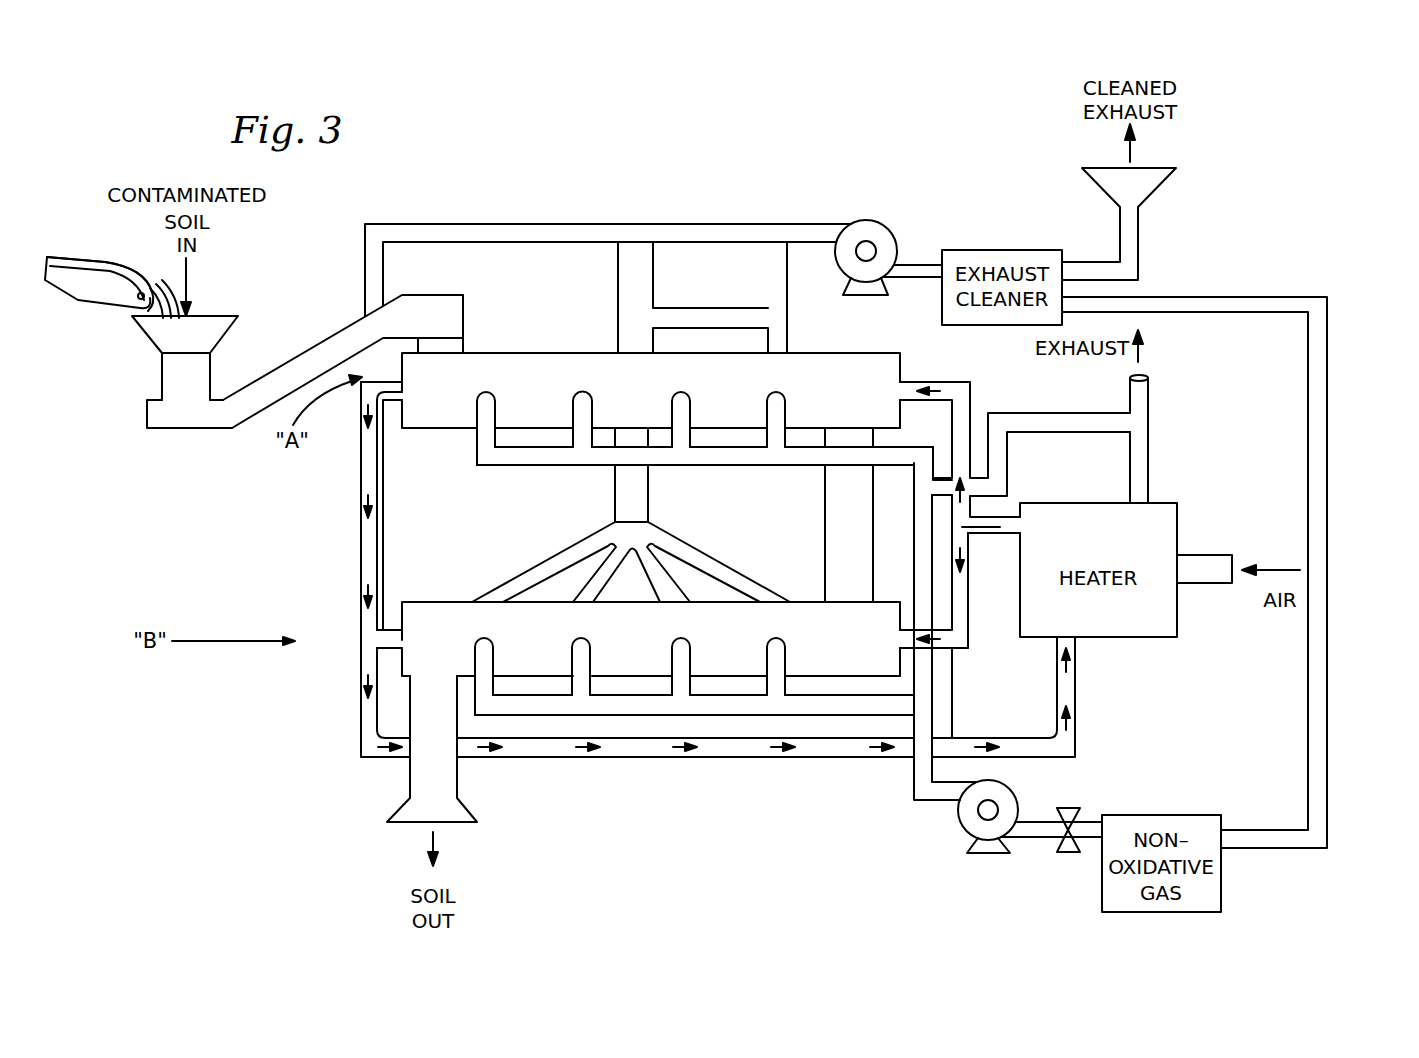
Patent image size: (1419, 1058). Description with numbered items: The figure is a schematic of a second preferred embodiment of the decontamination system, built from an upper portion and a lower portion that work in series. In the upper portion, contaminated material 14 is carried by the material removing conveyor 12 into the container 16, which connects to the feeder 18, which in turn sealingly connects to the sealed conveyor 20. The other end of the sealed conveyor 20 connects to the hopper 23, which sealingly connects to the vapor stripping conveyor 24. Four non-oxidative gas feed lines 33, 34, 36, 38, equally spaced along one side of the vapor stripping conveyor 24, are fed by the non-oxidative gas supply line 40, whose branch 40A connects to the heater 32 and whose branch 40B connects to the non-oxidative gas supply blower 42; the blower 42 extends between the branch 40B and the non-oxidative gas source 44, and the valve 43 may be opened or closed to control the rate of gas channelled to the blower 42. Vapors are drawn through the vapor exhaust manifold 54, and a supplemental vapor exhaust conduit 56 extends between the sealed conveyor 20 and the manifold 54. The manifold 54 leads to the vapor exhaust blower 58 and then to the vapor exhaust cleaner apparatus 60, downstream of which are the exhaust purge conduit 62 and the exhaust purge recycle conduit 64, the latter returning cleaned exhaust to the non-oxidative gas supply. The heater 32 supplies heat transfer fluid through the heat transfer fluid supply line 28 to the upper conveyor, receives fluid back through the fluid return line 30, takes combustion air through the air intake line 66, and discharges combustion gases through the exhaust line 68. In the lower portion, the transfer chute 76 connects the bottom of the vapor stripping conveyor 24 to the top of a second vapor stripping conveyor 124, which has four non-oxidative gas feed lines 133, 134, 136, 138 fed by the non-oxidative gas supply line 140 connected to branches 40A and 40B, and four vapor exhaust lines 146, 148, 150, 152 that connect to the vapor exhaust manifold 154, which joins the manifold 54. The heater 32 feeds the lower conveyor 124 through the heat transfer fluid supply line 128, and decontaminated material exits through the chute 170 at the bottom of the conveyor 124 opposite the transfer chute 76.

The material removing conveyor 12 is at (80, 258).
The contaminated material 14 is at (99, 274).
The container 16 is at (222, 316).
The feeder 18 is at (173, 391).
The sealed conveyor 20 is at (270, 386).
The hopper 23 is at (416, 344).
The vapor stripping conveyor 24 is at (431, 430).
The heat transfer fluid supply line 28 is at (950, 381).
The fluid return line 30 is at (360, 531).
The fluid heater 32 is at (1095, 500).
The non-oxidative gas feed line 33 is at (500, 414).
The non-oxidative gas feed line 34 is at (597, 414).
The non-oxidative gas feed line 36 is at (693, 414).
The non-oxidative gas feed line 38 is at (790, 414).
The non-oxidative gas supply line 40 is at (706, 466).
The branch 40A is at (933, 687).
The branch 40B is at (912, 785).
The non-oxidative gas supply blower 42 is at (962, 823).
The valve 43 is at (1070, 856).
The non-oxidative gas source 44 is at (1185, 815).
The vapor exhaust manifold 54 is at (655, 284).
The supplemental vapor exhaust conduit 56 is at (489, 224).
The vapor exhaust blower 58 is at (869, 222).
The vapor exhaust cleaner apparatus 60 is at (987, 249).
The exhaust purge conduit 62 is at (1141, 233).
The exhaust purge recycle conduit 64 is at (1329, 353).
The air intake line 66 is at (1206, 583).
The exhaust line 68 is at (1150, 399).
The transfer chute 76 is at (825, 529).
The vapor stripping conveyor 124 is at (424, 602).
The heat transfer fluid supply line 128 is at (950, 650).
The non-oxidative gas feed line 133 is at (498, 664).
The non-oxidative gas feed line 134 is at (595, 664).
The non-oxidative gas feed line 136 is at (695, 664).
The non-oxidative gas feed line 138 is at (790, 664).
The non-oxidative gas supply line 140 is at (740, 717).
The vapor exhaust line 146 is at (560, 557).
The vapor exhaust line 148 is at (598, 571).
The vapor exhaust line 150 is at (668, 570).
The vapor exhaust line 152 is at (736, 581).
The vapor exhaust manifold 154 is at (668, 342).
The chute 170 is at (410, 778).